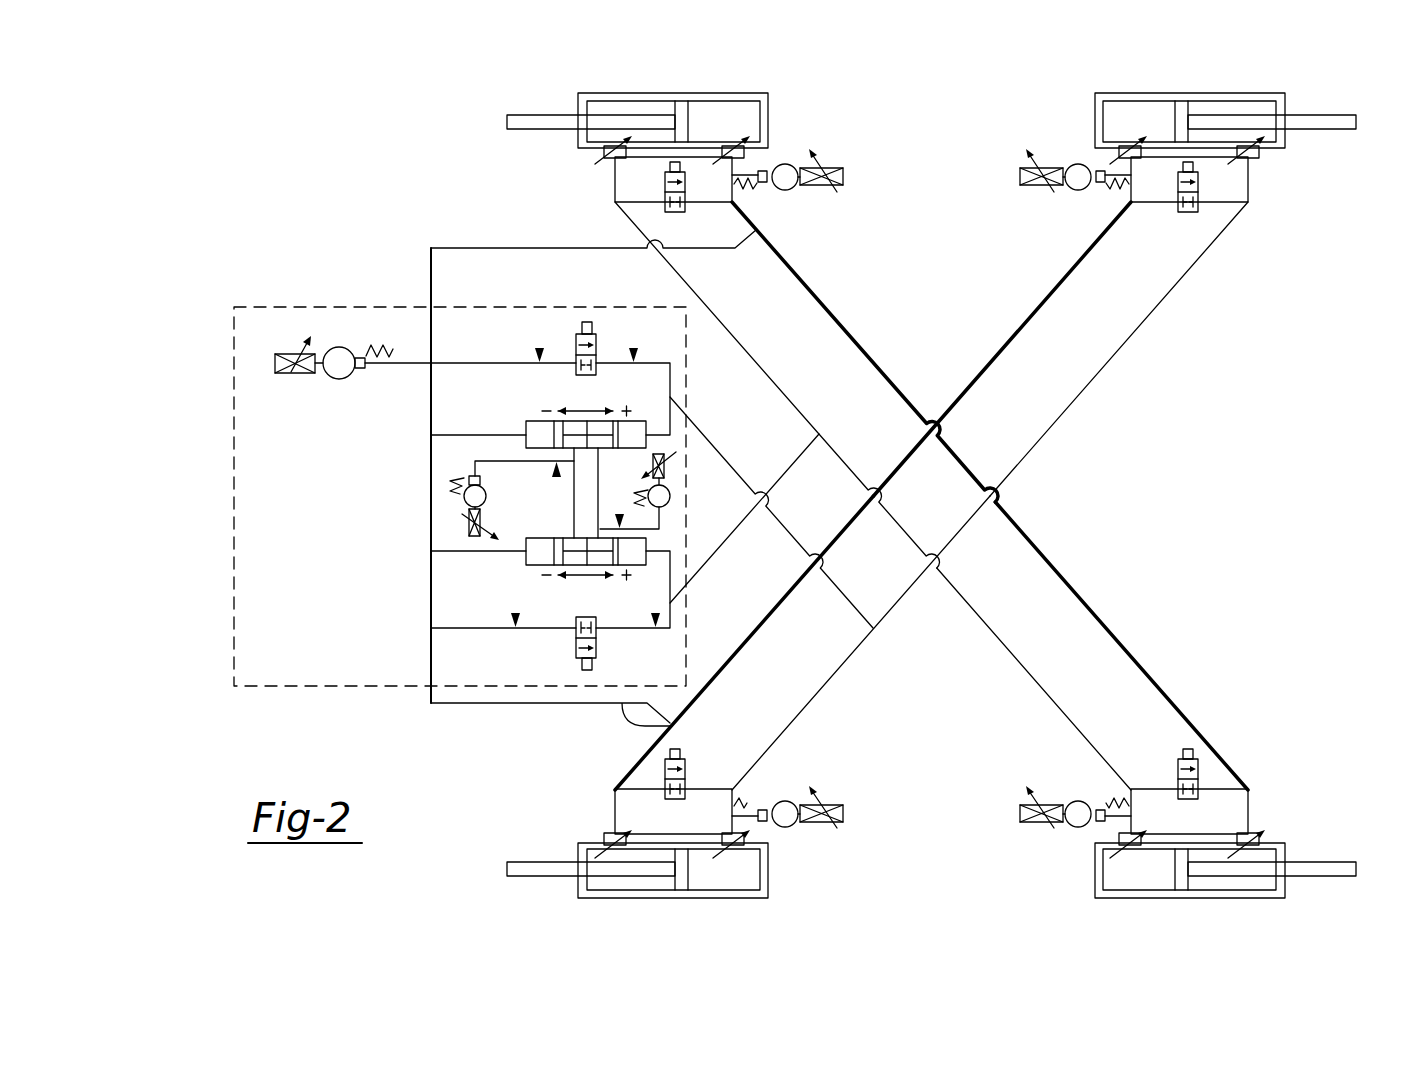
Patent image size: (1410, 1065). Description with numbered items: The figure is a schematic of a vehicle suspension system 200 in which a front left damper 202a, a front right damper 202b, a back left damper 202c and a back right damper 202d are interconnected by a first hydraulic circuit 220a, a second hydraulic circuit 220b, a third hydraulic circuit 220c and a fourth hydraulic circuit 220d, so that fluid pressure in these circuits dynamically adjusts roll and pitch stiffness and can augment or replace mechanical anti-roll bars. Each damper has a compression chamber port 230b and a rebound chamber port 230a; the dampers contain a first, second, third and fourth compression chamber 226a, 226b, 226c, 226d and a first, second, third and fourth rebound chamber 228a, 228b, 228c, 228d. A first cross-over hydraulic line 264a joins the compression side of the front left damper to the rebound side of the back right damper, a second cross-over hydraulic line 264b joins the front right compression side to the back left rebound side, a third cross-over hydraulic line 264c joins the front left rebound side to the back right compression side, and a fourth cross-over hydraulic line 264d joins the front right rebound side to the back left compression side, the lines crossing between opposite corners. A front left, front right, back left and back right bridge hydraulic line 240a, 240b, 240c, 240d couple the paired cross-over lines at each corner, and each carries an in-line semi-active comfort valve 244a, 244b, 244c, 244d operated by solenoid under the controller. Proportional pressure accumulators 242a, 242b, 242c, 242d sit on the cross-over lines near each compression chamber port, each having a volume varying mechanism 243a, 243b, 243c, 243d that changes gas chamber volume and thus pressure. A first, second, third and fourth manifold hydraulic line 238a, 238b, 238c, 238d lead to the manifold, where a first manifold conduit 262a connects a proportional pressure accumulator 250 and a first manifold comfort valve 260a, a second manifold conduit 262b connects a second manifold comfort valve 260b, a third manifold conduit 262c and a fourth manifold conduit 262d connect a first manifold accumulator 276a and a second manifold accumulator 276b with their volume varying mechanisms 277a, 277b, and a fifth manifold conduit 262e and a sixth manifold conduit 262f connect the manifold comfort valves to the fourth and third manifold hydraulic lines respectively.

The suspension system 200 is at (268, 130).
The front left damper 202a is at (676, 94).
The front right damper 202b is at (1187, 90).
The back left damper 202c is at (692, 898).
The back right damper 202d is at (1169, 898).
The first compression chamber 226a is at (703, 110).
The second compression chamber 226b is at (1163, 91).
The third compression chamber 226c is at (703, 884).
The fourth compression chamber 226d is at (1153, 884).
The first rebound chamber 228a is at (611, 108).
The second rebound chamber 228b is at (1247, 108).
The third rebound chamber 228c is at (625, 890).
The fourth rebound chamber 228d is at (1232, 884).
The rebound chamber port 230a is at (597, 150).
The compression chamber port 230b is at (746, 148).
The first manifold hydraulic line 238a is at (526, 246).
The second manifold hydraulic line 238b is at (672, 716).
The third manifold hydraulic line 238c is at (712, 552).
The fourth manifold hydraulic line 238d is at (718, 448).
The front left bridge hydraulic line 240a is at (664, 227).
The front right bridge hydraulic line 240b is at (1203, 214).
The back left bridge hydraulic line 240c is at (659, 786).
The back right bridge hydraulic line 240d is at (1210, 781).
The front left accumulator 242a is at (790, 192).
The front right accumulator 242b is at (1077, 192).
The back left accumulator 242c is at (790, 800).
The back right accumulator 242d is at (1078, 800).
The volume varying mechanism 243a is at (850, 177).
The volume varying mechanism 243b is at (1012, 177).
The volume varying mechanism 243c is at (850, 815).
The volume varying mechanism 243d is at (1010, 815).
The front left comfort valve 244a is at (690, 210).
The front right comfort valve 244b is at (1176, 210).
The back left comfort valve 244c is at (656, 768).
The back right comfort valve 244d is at (1202, 770).
The first hydraulic circuit 220a is at (810, 289).
The second hydraulic circuit 220b is at (1057, 283).
The third hydraulic circuit 220c is at (1006, 652).
The fourth hydraulic circuit 220d is at (1162, 322).
The first cross-over hydraulic line 264a is at (1090, 606).
The second cross-over hydraulic line 264b is at (1027, 327).
The third cross-over hydraulic line 264c is at (1050, 702).
The fourth cross-over hydraulic line 264d is at (1068, 410).
The proportional pressure accumulator 250 is at (336, 385).
The first manifold comfort valve 260a is at (594, 322).
The second manifold comfort valve 260b is at (576, 672).
The first manifold conduit 262a is at (431, 258).
The second manifold conduit 262b is at (429, 606).
The third manifold conduit 262c is at (494, 460).
The fourth manifold conduit 262d is at (660, 527).
The fifth manifold conduit 262e is at (671, 376).
The sixth manifold conduit 262f is at (672, 612).
The first manifold accumulator 276a is at (487, 494).
The second manifold accumulator 276b is at (670, 494).
The volume varying mechanism 277a is at (462, 523).
The volume varying mechanism 277b is at (668, 450).